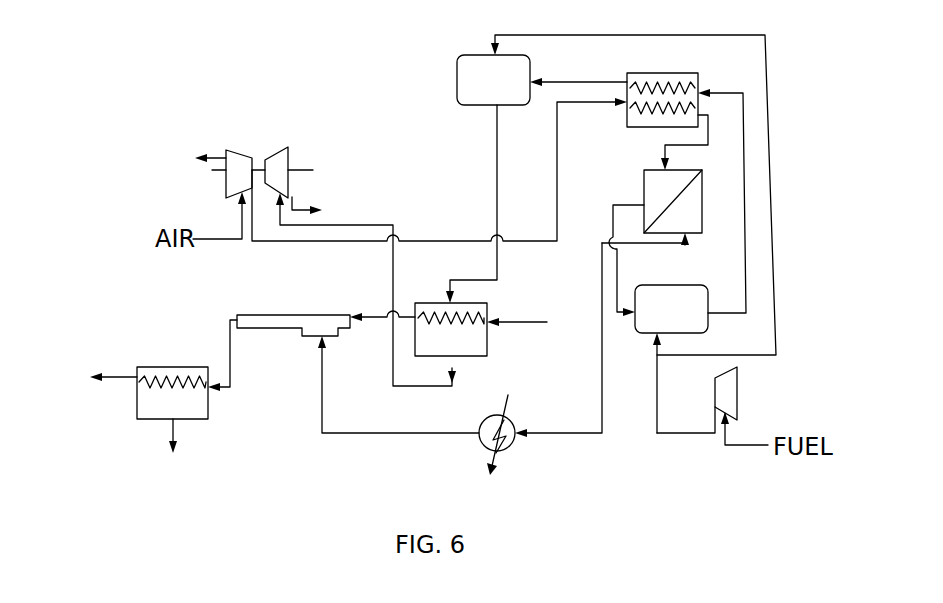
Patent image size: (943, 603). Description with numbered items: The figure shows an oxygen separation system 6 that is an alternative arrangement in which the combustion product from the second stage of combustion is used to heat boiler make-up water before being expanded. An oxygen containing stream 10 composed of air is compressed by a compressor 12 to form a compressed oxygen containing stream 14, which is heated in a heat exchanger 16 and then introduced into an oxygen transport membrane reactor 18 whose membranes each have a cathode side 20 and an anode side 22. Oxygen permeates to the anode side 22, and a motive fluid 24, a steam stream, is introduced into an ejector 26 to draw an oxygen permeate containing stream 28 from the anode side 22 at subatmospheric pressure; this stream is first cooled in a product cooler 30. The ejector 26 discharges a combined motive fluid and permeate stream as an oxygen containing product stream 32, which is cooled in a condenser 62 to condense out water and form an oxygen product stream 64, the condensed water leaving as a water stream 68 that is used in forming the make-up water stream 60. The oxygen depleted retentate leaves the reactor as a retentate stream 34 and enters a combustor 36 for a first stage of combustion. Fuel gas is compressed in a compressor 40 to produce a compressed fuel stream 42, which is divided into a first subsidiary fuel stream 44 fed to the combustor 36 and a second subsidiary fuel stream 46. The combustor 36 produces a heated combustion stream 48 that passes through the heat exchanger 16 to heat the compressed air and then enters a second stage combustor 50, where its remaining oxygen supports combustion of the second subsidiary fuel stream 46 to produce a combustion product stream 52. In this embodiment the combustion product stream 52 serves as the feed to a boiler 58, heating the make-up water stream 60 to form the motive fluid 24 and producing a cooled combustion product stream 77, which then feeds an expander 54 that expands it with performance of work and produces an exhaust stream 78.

The oxygen separation system 6 is at (385, 88).
The oxygen containing stream 10 is at (220, 240).
The compressor 12 is at (243, 158).
The compressed oxygen containing stream 14 is at (303, 241).
The heat exchanger 16 is at (668, 80).
The oxygen transport membrane reactor 18 is at (644, 180).
The cathode side 20 is at (650, 172).
The anode side 22 is at (702, 208).
The motive fluid 24 is at (383, 317).
The ejector 26 is at (280, 330).
The oxygen permeate containing stream 28 is at (604, 400).
The product cooler 30 is at (482, 449).
The oxygen containing product stream 32 is at (230, 338).
The retentate stream 34 is at (613, 212).
The combustor 36 is at (672, 290).
The compressor 40 is at (730, 395).
The compressed fuel stream 42 is at (672, 433).
The first subsidiary fuel stream 44 is at (652, 345).
The second subsidiary fuel stream 46 is at (775, 255).
The heated combustion stream 48 is at (750, 300).
The combustor 50 is at (470, 75).
The combustion product stream 52 is at (497, 138).
The expander 54 is at (279, 160).
The boiler 58 is at (488, 348).
The make-up water stream 60 is at (530, 322).
The condenser 62 is at (145, 400).
The oxygen product stream 64 is at (117, 377).
The water stream 68 is at (177, 425).
The cooled combustion product stream 77 is at (407, 387).
The exhaust stream 78 is at (298, 212).